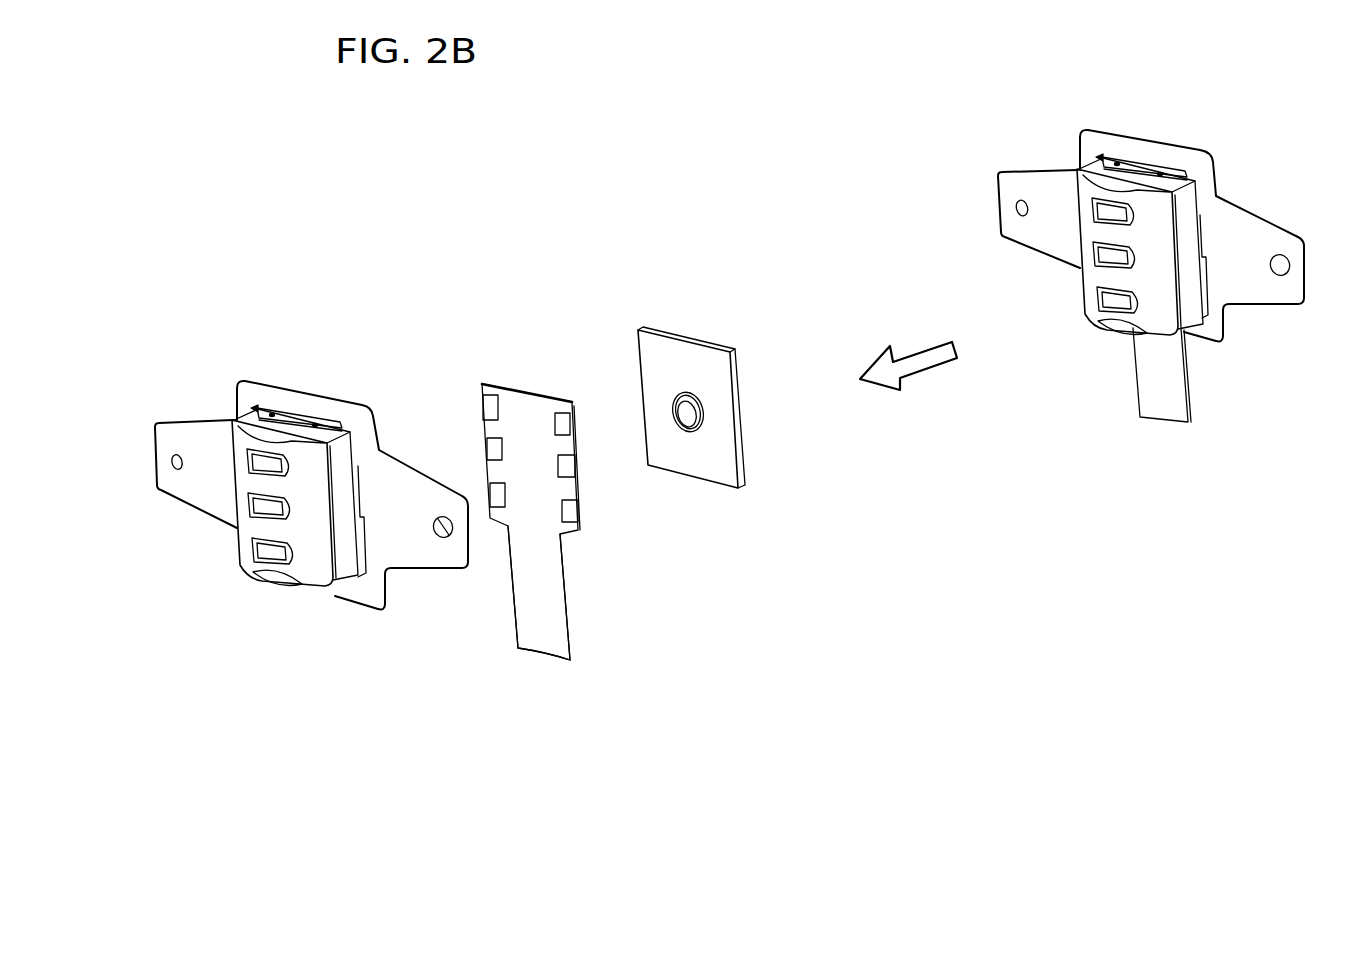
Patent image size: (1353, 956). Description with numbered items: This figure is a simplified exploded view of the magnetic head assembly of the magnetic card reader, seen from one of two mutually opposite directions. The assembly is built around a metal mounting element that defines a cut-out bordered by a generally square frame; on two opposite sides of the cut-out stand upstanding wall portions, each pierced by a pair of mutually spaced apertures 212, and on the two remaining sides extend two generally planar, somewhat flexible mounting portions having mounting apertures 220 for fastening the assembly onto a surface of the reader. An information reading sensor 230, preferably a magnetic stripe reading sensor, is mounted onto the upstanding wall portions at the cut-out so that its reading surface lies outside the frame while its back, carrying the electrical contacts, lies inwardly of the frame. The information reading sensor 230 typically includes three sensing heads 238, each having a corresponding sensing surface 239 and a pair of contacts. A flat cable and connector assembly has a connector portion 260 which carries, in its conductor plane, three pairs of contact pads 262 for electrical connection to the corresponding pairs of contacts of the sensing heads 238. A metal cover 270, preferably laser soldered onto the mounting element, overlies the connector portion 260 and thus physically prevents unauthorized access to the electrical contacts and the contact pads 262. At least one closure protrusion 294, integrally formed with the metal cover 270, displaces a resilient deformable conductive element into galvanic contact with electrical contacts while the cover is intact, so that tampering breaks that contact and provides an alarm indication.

The apertures 212 is at (254, 405).
The mounting apertures 220 is at (172, 458).
The information reading sensor 230 is at (310, 568).
The sensing heads 238 is at (1092, 210).
The sensing surface 239 is at (248, 461).
The connector portion 260 is at (578, 490).
The contact pads 262 is at (548, 460).
The metal cover 270 is at (718, 373).
The closure protrusion 294 is at (683, 408).